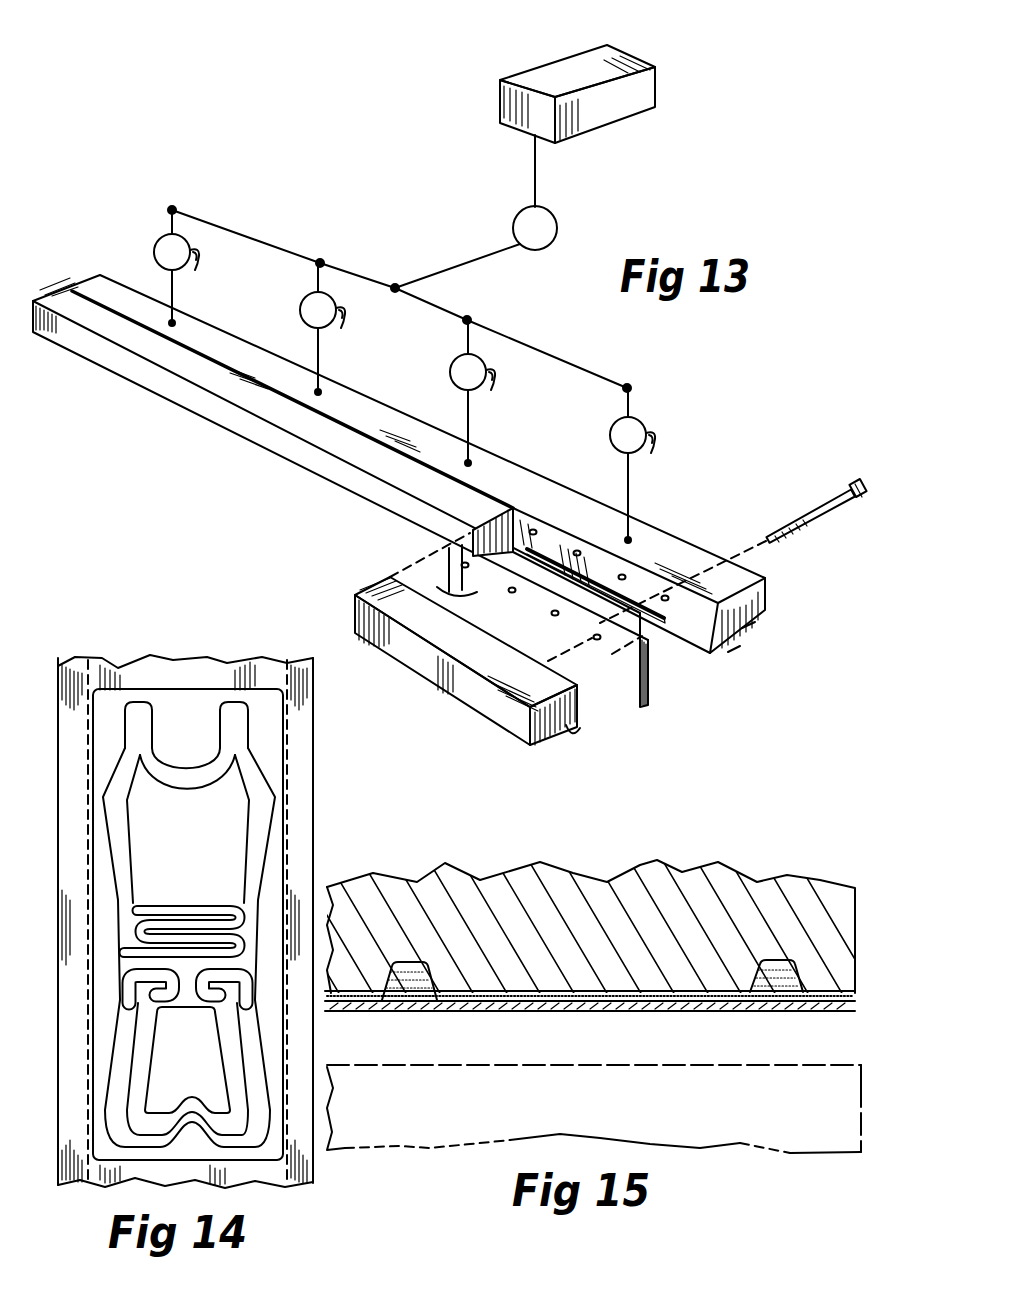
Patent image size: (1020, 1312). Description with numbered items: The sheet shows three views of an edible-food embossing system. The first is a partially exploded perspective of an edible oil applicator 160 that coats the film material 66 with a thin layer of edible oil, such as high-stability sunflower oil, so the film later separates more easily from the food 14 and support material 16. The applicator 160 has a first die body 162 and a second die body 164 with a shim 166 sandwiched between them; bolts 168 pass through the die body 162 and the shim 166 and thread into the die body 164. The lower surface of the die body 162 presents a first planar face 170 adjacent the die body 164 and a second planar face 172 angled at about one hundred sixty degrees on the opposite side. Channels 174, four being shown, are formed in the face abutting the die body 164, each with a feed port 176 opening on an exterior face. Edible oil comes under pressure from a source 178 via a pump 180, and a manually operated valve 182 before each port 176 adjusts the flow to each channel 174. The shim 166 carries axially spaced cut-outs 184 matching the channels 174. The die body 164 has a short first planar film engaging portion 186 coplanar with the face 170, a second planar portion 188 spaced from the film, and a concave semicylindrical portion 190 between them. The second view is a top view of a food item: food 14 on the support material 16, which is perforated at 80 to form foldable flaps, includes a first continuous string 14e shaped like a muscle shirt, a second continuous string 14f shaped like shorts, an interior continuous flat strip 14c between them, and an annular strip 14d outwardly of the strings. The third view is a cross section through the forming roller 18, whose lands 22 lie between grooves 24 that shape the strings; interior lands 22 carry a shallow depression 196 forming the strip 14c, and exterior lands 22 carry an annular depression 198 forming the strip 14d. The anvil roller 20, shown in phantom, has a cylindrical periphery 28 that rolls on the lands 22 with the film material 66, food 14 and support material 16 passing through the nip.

In FIG. 13, the edible oil applicator 160 is at (132, 194).
In FIG. 13, the first die body 162 is at (704, 532).
In FIG. 13, the second die body 164 is at (472, 708).
In FIG. 13, the shim 166 is at (662, 712).
In FIG. 13, the bolts 168 is at (835, 492).
In FIG. 13, the first planar face 170 is at (735, 648).
In FIG. 13, the second planar face 172 is at (750, 622).
In FIG. 13, the channel 174 is at (662, 622).
In FIG. 13, the feed port 176 is at (318, 392).
In FIG. 13, the source 178 is at (510, 97).
In FIG. 13, the pump 180 is at (557, 220).
In FIG. 13, the manually operated valve 182 is at (156, 245).
In FIG. 13, the cut-outs 184 is at (452, 598).
In FIG. 13, the first planar film engaging portion 186 is at (572, 730).
In FIG. 13, the second planar portion 188 is at (535, 745).
In FIG. 13, the third semicylindrical portion 190 is at (558, 748).
In FIG. 14, the food 14 is at (166, 678).
In FIG. 14, the interior continuous flat strip 14c is at (237, 836).
In FIG. 15, the interior continuous flat strip 14c is at (528, 991).
In FIG. 14, the annular strip 14d is at (200, 702).
In FIG. 14, the first continuous string 14e is at (240, 741).
In FIG. 15, the first continuous string 14e is at (408, 1000).
In FIG. 14, the second continuous string 14f is at (258, 1093).
In FIG. 14, the support material 16 is at (100, 650).
In FIG. 15, the support material 16 is at (640, 1022).
In FIG. 14, the perforation 80 is at (287, 680).
In FIG. 15, the forming roller 18 is at (748, 858).
In FIG. 15, the anvil roller 20 is at (806, 1166).
In FIG. 15, the lands 22 is at (335, 1000).
In FIG. 15, the grooves 24 is at (417, 962).
In FIG. 15, the cylindrical periphery 28 is at (475, 1065).
In FIG. 15, the film material 66 is at (648, 1000).
In FIG. 15, the depression 196 is at (565, 993).
In FIG. 15, the annular depression 198 is at (360, 1002).